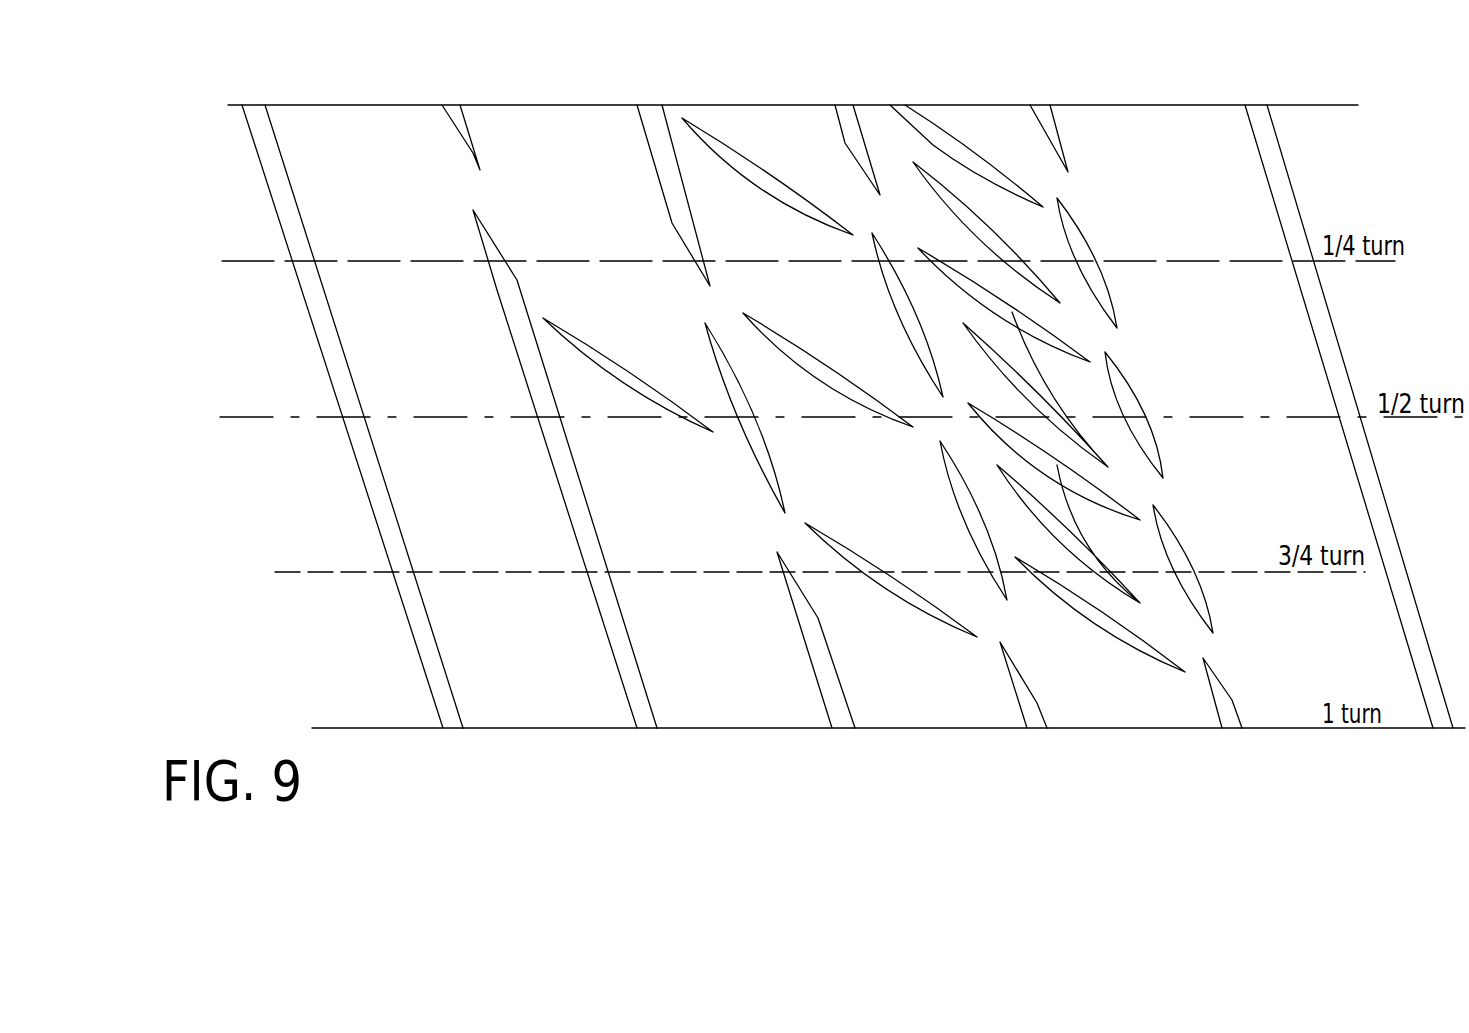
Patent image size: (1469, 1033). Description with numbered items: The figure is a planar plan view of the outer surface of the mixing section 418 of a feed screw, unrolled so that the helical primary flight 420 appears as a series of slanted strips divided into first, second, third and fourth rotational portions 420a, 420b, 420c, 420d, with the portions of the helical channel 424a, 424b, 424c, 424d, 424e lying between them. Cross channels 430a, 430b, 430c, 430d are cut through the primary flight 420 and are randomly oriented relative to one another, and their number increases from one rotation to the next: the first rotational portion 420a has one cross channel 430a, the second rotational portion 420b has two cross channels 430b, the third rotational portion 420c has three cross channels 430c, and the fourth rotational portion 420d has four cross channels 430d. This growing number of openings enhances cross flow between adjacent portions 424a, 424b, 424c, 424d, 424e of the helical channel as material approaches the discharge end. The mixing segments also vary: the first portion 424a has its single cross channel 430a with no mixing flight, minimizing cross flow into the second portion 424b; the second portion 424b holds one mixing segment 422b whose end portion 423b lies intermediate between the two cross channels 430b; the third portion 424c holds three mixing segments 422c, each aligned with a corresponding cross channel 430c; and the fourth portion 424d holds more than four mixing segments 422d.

The mixing section 418 is at (742, 85).
The primary flight 420 is at (448, 108).
The first rotational portion of the primary flight 420a is at (512, 300).
The second rotational portion of the primary flight 420b is at (657, 118).
The third rotational portion of the primary flight 420c is at (843, 113).
The fourth rotational portion of the primary flight 420d is at (1038, 105).
The mixing segment 422b is at (623, 373).
The mixing segments 422c is at (750, 168).
The mixing segments 422d is at (943, 142).
The end portion 423b is at (700, 427).
The first portion of the helical channel 424a is at (527, 718).
The second portion of the helical channel 424b is at (712, 718).
The third portion of the helical channel 424c is at (897, 720).
The fourth portion of the helical channel 424d is at (1087, 720).
The fifth portion of the helical channel 424e is at (1270, 718).
The cross channel 430a is at (477, 192).
The cross channels 430b is at (707, 298).
The cross channels 430c is at (873, 210).
The cross channels 430d is at (1065, 183).